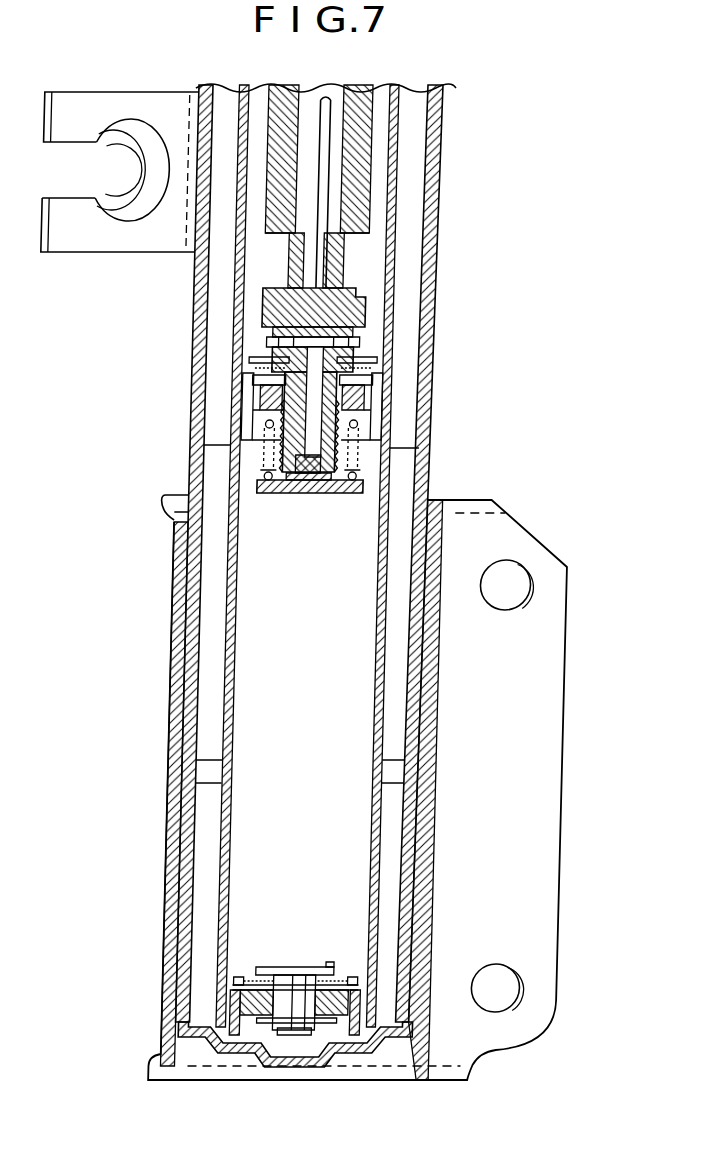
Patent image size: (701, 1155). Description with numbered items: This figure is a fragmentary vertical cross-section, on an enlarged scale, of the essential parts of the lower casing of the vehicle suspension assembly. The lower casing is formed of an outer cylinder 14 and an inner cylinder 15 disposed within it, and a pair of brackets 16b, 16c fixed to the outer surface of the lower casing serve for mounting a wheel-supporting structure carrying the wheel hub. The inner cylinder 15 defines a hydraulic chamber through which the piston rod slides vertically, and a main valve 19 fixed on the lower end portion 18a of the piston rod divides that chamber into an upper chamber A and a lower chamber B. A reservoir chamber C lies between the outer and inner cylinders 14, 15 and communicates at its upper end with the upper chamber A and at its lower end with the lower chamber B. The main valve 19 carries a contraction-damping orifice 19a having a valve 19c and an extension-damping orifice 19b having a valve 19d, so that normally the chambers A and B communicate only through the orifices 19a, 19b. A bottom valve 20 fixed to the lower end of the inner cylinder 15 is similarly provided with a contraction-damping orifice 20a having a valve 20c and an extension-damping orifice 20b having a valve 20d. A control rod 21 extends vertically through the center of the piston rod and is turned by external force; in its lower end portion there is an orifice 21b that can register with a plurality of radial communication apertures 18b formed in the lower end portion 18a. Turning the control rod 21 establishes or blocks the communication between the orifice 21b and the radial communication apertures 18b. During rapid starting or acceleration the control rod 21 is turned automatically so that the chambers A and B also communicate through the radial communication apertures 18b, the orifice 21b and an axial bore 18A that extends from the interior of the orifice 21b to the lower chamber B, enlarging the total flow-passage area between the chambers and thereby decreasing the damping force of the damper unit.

The outer cylinder 14 is at (441, 284).
The inner cylinder 15 is at (397, 238).
The upper chamber A is at (383, 131).
The lower chamber B is at (319, 644).
The reservoir chamber C is at (213, 613).
The control rod 21 is at (331, 181).
The orifice 21b is at (267, 345).
The lower end portion of the piston rod 18a is at (263, 303).
The radial communication apertures 18b is at (358, 340).
The axial bore 18A is at (313, 460).
The main valve 19 is at (245, 428).
The contraction-damping orifice 19a is at (250, 395).
The extension-damping orifice 19b is at (382, 397).
The valve 19c is at (378, 372).
The valve 19d is at (382, 422).
The bracket 16b is at (540, 645).
The bracket 16c is at (105, 238).
The bottom valve 20 is at (228, 1000).
The contraction-damping orifice 20a is at (326, 968).
The extension-damping orifice 20b is at (243, 1007).
The valve 20c is at (312, 1032).
The valve 20d is at (257, 993).